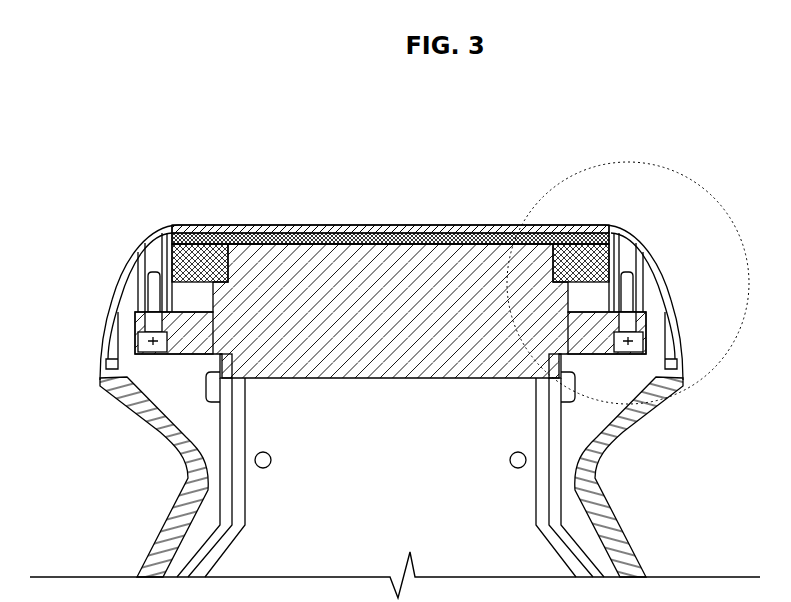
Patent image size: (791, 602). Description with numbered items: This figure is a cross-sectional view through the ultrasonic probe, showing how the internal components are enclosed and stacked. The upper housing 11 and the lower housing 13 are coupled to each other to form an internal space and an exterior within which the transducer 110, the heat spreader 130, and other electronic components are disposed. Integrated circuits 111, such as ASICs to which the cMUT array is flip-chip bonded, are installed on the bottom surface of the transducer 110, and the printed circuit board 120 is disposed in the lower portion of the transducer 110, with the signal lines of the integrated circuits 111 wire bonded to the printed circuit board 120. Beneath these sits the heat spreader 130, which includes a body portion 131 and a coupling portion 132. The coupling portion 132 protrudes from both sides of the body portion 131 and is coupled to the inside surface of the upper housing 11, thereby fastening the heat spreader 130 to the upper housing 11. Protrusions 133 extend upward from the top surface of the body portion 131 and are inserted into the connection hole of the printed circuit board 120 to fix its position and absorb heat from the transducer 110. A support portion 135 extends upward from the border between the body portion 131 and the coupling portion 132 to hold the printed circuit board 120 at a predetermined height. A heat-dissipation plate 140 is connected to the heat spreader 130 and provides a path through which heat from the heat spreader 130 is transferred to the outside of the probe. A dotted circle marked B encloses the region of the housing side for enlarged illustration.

The upper housing 11 is at (127, 266).
The lower housing 13 is at (178, 438).
The transducer 110 is at (422, 231).
The integrated circuits 111 is at (293, 235).
The printed circuit board 120 is at (197, 244).
The heat spreader 130 is at (192, 357).
The body portion 131 is at (478, 300).
The coupling portion 132 is at (188, 350).
The protrusions 133 is at (371, 252).
The support portion 135 is at (212, 288).
The heat-dissipation plate 140 is at (507, 513).
The enlarged region B is at (628, 162).